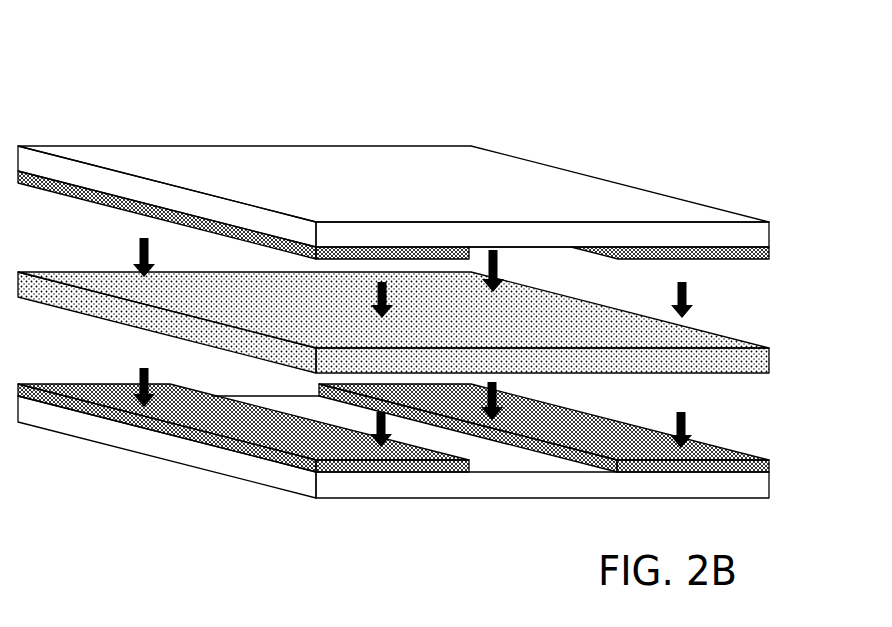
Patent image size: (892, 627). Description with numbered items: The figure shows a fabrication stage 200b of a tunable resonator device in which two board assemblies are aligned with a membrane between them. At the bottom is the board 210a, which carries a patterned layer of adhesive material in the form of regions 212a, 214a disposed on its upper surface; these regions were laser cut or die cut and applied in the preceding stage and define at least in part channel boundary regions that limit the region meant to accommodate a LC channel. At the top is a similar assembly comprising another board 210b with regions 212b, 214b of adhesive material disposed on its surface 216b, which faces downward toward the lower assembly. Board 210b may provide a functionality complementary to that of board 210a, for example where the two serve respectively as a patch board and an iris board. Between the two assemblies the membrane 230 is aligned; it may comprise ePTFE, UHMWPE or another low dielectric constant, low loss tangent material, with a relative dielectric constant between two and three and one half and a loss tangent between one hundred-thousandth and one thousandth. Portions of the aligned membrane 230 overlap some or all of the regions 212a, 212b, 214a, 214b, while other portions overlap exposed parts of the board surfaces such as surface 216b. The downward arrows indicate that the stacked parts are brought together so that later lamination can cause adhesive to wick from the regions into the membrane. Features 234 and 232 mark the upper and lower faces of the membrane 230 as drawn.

The fabrication stage 200b is at (86, 110).
The board 210b is at (423, 195).
The region of adhesive material 212b is at (104, 203).
The region of adhesive material 214b is at (688, 262).
The surface of board 216b is at (528, 248).
The membrane 230 is at (393, 306).
The upper surface of intermediate layer 234 is at (97, 283).
The lower surface of intermediate layer 232 is at (93, 317).
The board 210a is at (325, 500).
The region of adhesive material 212a is at (279, 437).
The region of adhesive material 214a is at (585, 437).